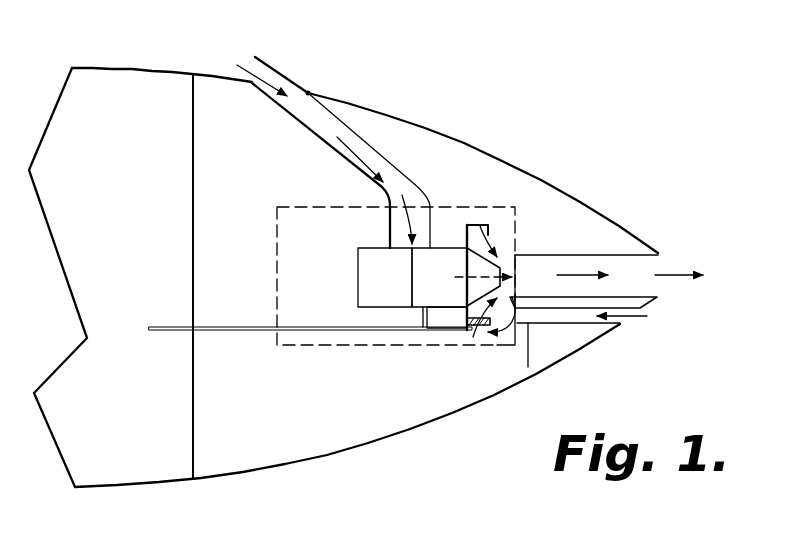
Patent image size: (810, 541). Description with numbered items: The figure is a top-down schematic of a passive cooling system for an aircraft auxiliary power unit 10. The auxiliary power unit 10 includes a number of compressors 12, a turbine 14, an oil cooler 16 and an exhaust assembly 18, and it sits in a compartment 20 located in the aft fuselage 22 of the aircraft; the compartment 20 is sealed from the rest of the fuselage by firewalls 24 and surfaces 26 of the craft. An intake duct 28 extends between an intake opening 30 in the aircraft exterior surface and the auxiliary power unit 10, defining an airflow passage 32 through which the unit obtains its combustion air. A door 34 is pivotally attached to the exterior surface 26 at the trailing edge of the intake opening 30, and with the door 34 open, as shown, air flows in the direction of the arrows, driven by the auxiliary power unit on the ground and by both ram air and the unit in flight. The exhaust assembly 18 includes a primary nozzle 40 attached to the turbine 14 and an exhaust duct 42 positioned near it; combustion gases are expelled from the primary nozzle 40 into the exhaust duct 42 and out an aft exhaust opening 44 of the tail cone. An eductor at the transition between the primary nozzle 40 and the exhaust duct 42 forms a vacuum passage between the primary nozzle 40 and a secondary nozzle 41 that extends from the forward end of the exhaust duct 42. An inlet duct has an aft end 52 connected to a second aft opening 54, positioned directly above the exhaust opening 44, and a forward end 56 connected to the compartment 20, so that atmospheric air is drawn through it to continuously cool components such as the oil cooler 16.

The auxiliary power unit 10 is at (330, 329).
The compressors 12 is at (375, 295).
The turbine 14 is at (430, 297).
The oil cooler 16 is at (479, 327).
The exhaust assembly 18 is at (528, 240).
The compartment 20 is at (477, 204).
The aft fuselage 22 is at (290, 450).
The firewalls 24 is at (193, 105).
The surfaces 26 is at (413, 126).
The intake duct 28 is at (347, 122).
The intake opening 30 is at (250, 63).
The airflow passage 32 is at (288, 108).
The door 34 is at (282, 74).
The primary nozzle 40 is at (475, 224).
The secondary nozzle 41 is at (494, 250).
The exhaust duct 42 is at (602, 254).
The aft exhaust opening 44 is at (652, 262).
The aft end 52 is at (605, 323).
The second aft opening 54 is at (652, 307).
The forward end 56 is at (528, 367).